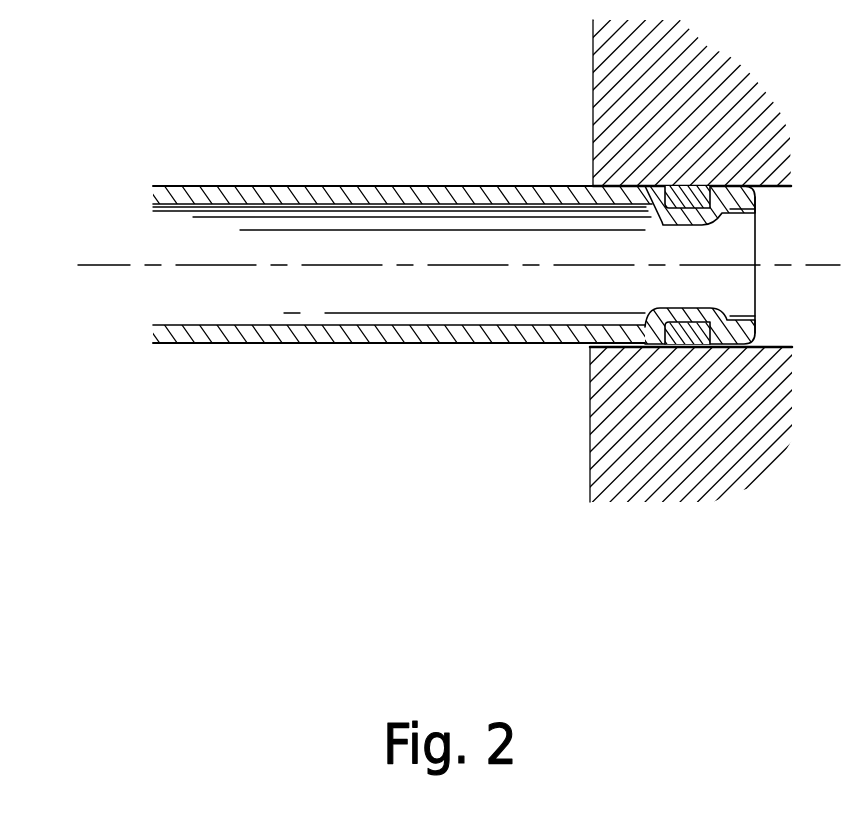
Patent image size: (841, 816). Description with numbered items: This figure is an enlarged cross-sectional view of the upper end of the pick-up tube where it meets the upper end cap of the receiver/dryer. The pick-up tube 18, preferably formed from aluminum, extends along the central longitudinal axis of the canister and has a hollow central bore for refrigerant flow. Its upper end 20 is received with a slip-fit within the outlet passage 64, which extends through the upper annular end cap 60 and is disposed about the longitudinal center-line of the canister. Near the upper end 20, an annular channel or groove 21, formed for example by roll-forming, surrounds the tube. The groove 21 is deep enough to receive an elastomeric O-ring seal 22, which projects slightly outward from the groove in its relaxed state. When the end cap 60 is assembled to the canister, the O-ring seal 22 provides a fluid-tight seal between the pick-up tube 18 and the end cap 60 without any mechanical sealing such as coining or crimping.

The pick-up tube 18 is at (427, 187).
The upper end of the pick-up tube 20 is at (723, 265).
The annular channel or groove 21 is at (663, 225).
The O-ring seal 22 is at (704, 226).
The upper annular end cap 60 is at (598, 398).
The outlet passage 64 is at (802, 310).